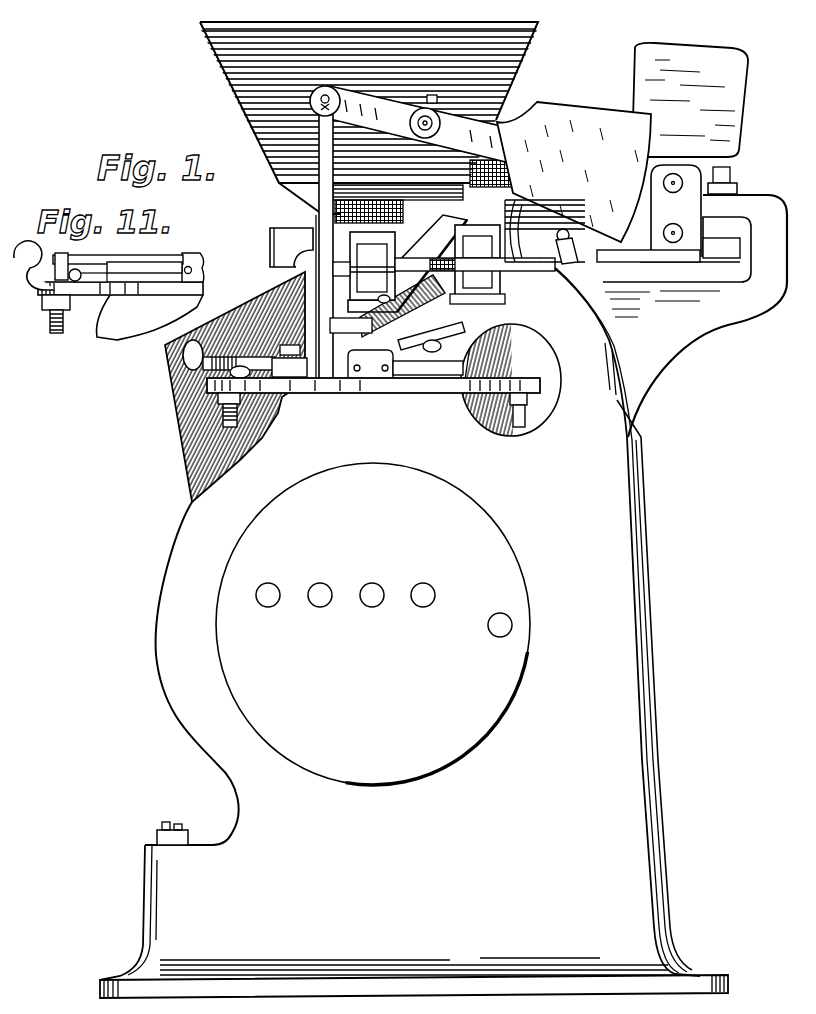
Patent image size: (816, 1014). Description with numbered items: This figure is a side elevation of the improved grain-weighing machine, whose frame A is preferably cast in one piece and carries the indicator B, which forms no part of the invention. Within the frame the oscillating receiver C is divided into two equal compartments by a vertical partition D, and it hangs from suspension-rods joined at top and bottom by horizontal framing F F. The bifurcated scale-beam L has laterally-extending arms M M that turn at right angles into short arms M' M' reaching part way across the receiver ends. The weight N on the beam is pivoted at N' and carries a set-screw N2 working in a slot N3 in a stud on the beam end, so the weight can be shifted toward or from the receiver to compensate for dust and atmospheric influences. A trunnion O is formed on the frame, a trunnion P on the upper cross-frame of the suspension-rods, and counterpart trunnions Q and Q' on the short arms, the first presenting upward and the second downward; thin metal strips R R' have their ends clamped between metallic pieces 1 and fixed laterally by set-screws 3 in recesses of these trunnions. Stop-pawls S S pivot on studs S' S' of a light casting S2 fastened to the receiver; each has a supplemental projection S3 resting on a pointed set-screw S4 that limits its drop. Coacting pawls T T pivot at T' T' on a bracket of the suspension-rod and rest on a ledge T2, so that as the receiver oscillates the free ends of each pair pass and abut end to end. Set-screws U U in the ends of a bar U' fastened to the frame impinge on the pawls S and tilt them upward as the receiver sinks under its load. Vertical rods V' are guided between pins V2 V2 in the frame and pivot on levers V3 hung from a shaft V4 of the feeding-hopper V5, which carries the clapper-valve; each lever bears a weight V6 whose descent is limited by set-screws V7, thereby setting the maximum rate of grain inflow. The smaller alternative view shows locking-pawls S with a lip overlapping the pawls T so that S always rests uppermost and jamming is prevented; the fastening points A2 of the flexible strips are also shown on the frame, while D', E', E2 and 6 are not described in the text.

In FIG. 1, the frame A is at (443, 596).
In FIG. 11, the frame A is at (150, 317).
In FIG. 1, the fastening point of flexible strips A2 is at (186, 833).
In FIG. 1, the indicator B is at (373, 624).
In FIG. 1, the oscillating receiver C is at (235, 387).
In FIG. 1, the partition D is at (240, 372).
In FIG. 1, the roller D' is at (432, 346).
In FIG. 1, the bracket E' is at (291, 247).
In FIG. 1, the plate E2 is at (351, 329).
In FIG. 1, the horizontal framing F is at (370, 363).
In FIG. 1, the scale-beam L is at (664, 211).
In FIG. 1, the laterally-extending arms M is at (545, 231).
In FIG. 1, the short arms M' is at (407, 263).
In FIG. 1, the weight N is at (690, 100).
In FIG. 1, the pivot of weight N' is at (677, 229).
In FIG. 1, the set-screw N2 is at (671, 192).
In FIG. 1, the slot N3 is at (737, 180).
In FIG. 1, the trunnion O is at (477, 295).
In FIG. 1, the trunnion P is at (372, 265).
In FIG. 1, the trunnion Q is at (384, 303).
In FIG. 1, the trunnion Q' is at (477, 260).
In FIG. 1, the thin metal strip R is at (475, 266).
In FIG. 1, the thin metal strip R' is at (341, 271).
In FIG. 1, the stop-pawls S is at (193, 355).
In FIG. 11, the stop-pawls S is at (70, 263).
In FIG. 1, the laterally-extending studs S' is at (239, 362).
In FIG. 11, the laterally-extending studs S' is at (34, 264).
In FIG. 11, the light casting S2 is at (118, 252).
In FIG. 1, the supplemental projection S3 is at (431, 336).
In FIG. 1, the pointed set-screw S4 is at (290, 344).
In FIG. 1, the pawls T is at (290, 367).
In FIG. 11, the pawls T is at (144, 268).
In FIG. 1, the pivot of pawls T' is at (428, 365).
In FIG. 11, the pivot of pawls T' is at (91, 281).
In FIG. 11, the ledge T2 is at (193, 261).
In FIG. 1, the set-screws U is at (344, 374).
In FIG. 11, the set-screws U is at (102, 307).
In FIG. 1, the bar U' is at (382, 403).
In FIG. 1, the vertical rods V' is at (309, 204).
In FIG. 1, the pins V2 is at (573, 236).
In FIG. 1, the levers V3 is at (430, 127).
In FIG. 1, the shaft V4 is at (571, 260).
In FIG. 1, the feeding-hopper V5 is at (348, 226).
In FIG. 1, the weight V6 is at (574, 172).
In FIG. 1, the set-screws V7 is at (668, 250).
In FIG. 1, the metallic piece 1 is at (345, 595).
In FIG. 1, the set-screws 3 is at (410, 610).
In FIG. 1, the marking 6 is at (372, 595).